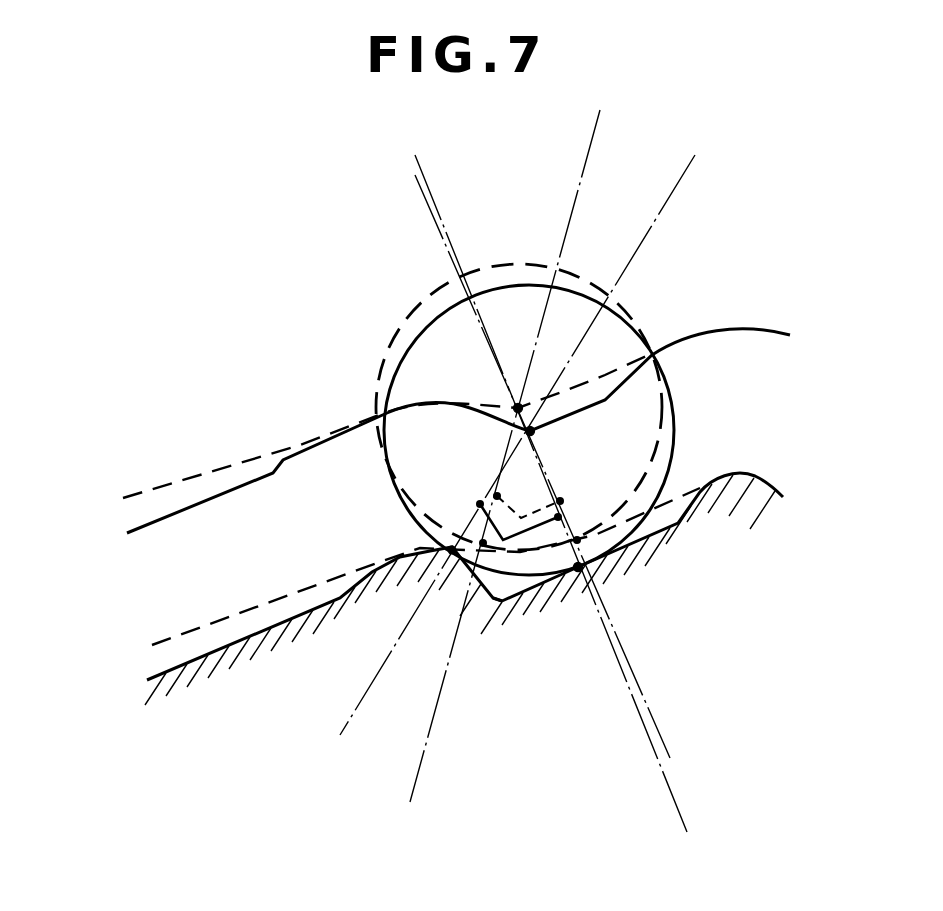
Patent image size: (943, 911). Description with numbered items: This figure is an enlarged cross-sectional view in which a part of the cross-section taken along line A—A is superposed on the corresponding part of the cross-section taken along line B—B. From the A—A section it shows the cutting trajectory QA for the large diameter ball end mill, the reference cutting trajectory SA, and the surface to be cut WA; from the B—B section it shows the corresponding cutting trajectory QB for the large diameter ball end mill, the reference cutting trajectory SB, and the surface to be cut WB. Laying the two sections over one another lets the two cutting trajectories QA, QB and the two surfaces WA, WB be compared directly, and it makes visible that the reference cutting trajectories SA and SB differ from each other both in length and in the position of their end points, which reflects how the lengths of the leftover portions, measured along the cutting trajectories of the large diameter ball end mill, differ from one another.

The cutting trajectory for the large diameter ball end mill in the cross-section alo QA is at (192, 507).
The cutting trajectory for the large diameter ball end mill in the cross-section alo QB is at (160, 490).
The surface to be cut in the cross-section along line A—A WA is at (178, 668).
The surface to be cut in the cross-section along line B—B WB is at (205, 620).
The reference cutting trajectory in the cross-section along line A—A SA is at (536, 528).
The reference cutting trajectory in the cross-section along line B—B SB is at (498, 605).